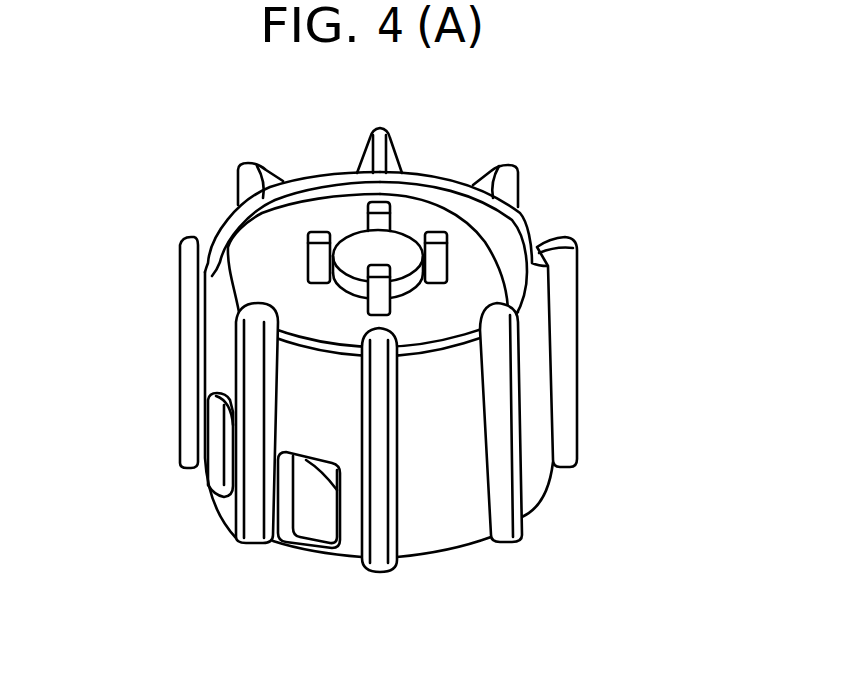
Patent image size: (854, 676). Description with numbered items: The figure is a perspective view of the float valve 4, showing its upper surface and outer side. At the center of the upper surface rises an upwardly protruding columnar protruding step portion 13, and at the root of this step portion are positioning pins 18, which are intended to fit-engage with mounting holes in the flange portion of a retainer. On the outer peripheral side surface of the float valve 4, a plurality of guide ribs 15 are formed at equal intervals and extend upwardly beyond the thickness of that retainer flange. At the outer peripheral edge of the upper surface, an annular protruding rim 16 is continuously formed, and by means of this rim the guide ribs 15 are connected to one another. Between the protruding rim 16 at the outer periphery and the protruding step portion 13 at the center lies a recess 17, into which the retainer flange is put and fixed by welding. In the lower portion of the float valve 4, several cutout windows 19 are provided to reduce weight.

The float valve 4 is at (540, 440).
The protruding step portion 13 is at (394, 247).
The guide ribs 15 is at (495, 166).
The protruding rim 16 is at (523, 218).
The recess 17 is at (475, 285).
The positioning pins 18 is at (318, 232).
The cutout windows 19 is at (226, 445).